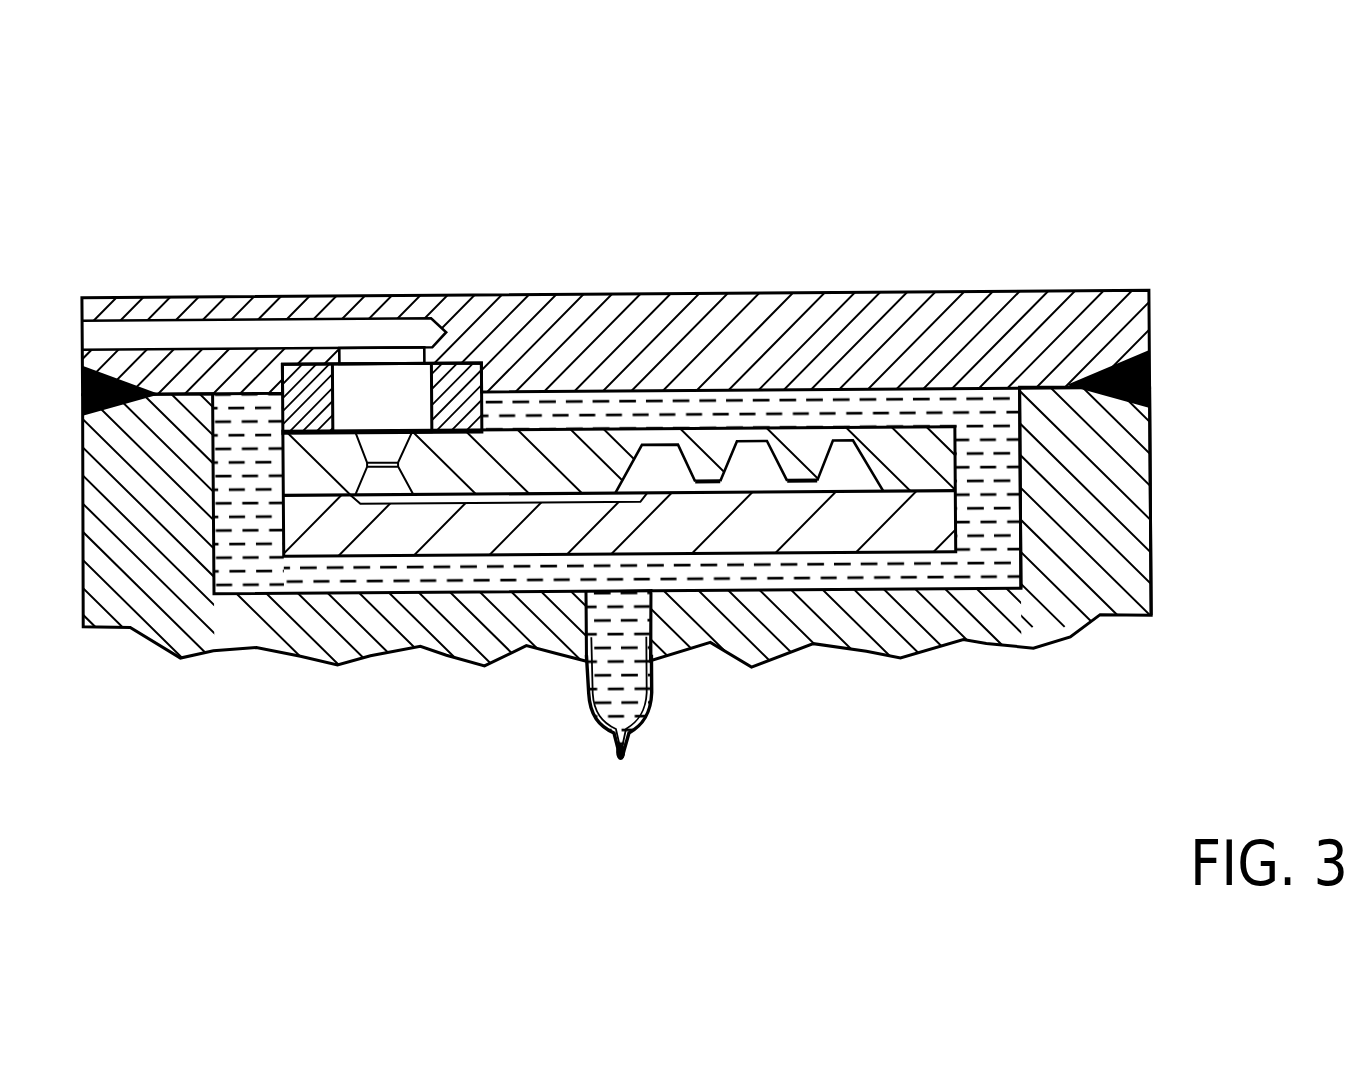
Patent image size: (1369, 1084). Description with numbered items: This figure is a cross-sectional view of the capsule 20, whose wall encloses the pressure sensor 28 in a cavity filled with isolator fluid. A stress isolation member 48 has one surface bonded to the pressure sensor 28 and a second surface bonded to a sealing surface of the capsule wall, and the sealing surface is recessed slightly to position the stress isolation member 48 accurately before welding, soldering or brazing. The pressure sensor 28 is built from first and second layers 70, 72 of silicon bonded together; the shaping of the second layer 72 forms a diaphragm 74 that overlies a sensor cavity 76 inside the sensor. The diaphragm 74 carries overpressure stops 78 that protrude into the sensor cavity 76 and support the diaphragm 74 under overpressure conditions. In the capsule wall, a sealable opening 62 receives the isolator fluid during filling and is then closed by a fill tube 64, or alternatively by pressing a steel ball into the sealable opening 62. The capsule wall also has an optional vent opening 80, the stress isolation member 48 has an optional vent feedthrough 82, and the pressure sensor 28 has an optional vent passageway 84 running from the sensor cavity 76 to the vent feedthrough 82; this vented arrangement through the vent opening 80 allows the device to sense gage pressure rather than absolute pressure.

The capsule 20 is at (1157, 227).
The pressure sensor 28 is at (908, 425).
The stress isolation member 48 is at (307, 396).
The sealable opening 62 is at (652, 600).
The fill tube 64 is at (650, 690).
The first layer 70 is at (1020, 526).
The second layer 72 is at (1020, 463).
The diaphragm 74 is at (650, 448).
The sensor cavity 76 is at (757, 455).
The overpressure stops 78 is at (803, 484).
The vent opening 80 is at (148, 330).
The vent feedthrough 82 is at (372, 390).
The vent passageway 84 is at (387, 504).